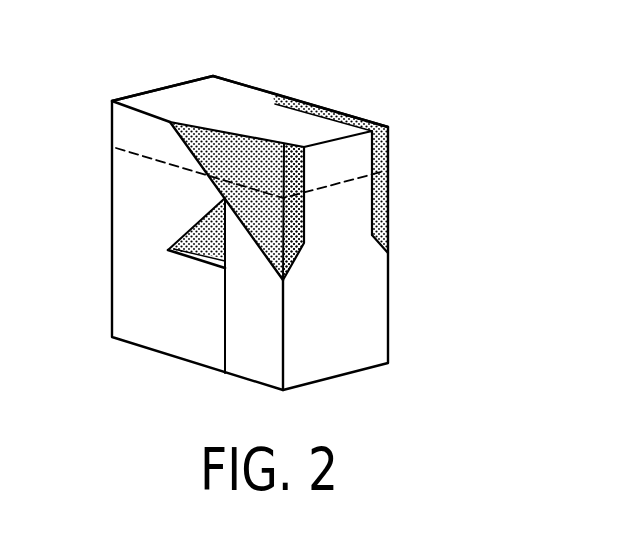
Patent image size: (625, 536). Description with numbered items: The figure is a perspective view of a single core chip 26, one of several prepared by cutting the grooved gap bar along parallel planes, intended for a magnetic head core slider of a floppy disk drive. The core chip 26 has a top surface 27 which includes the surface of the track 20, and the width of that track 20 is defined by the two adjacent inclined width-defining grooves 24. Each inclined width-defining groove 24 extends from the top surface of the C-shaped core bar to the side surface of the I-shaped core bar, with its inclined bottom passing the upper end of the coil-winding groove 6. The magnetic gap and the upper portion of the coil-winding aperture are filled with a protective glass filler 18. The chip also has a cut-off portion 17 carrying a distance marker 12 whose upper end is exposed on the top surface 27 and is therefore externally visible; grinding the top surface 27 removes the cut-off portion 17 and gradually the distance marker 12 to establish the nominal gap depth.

The core chip 26 is at (118, 70).
The top surface 27 is at (229, 93).
The distance marker 12 is at (291, 103).
The track 20 is at (321, 135).
The cut-off portion 17 is at (351, 163).
The inclined width-defining groove 24 is at (374, 216).
The protective glass filler 18 is at (218, 240).
The coil-winding groove 6 is at (181, 250).